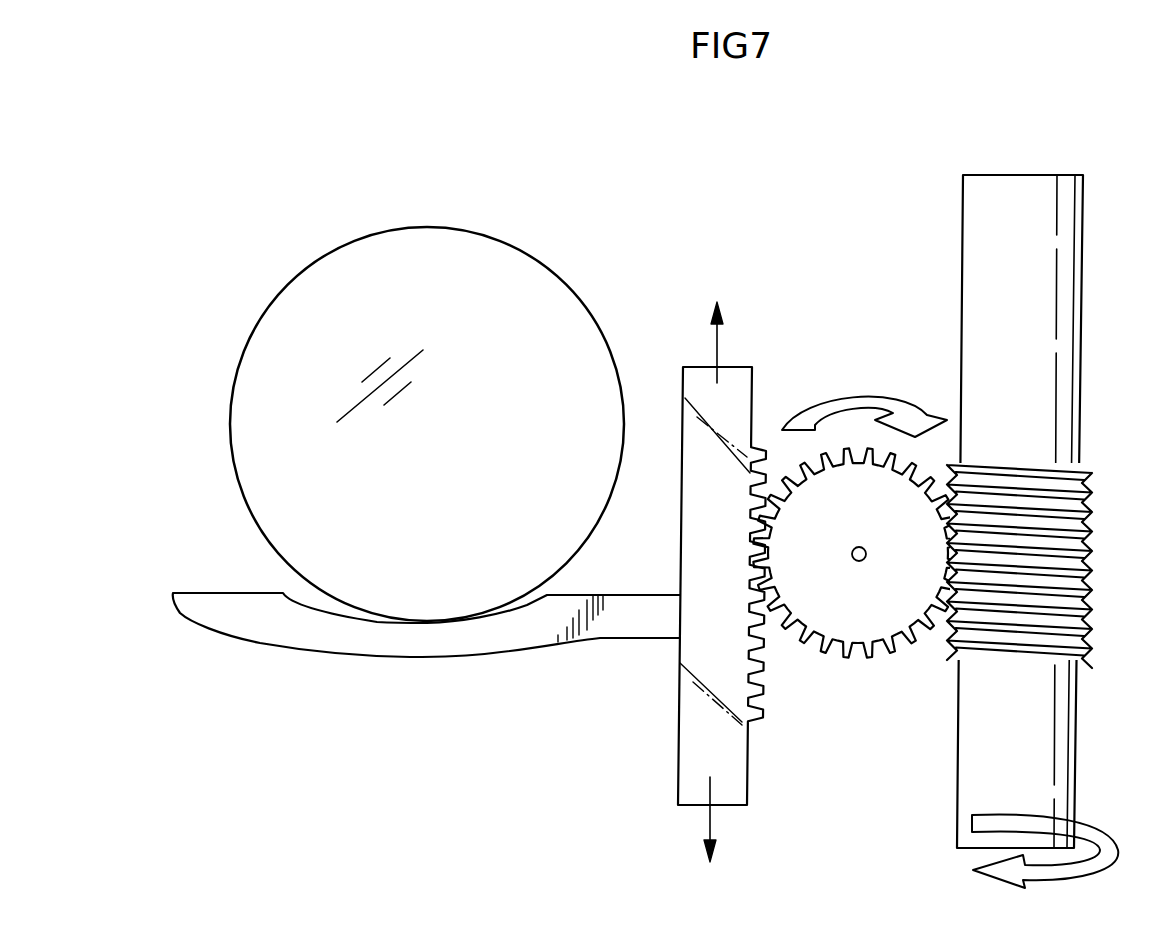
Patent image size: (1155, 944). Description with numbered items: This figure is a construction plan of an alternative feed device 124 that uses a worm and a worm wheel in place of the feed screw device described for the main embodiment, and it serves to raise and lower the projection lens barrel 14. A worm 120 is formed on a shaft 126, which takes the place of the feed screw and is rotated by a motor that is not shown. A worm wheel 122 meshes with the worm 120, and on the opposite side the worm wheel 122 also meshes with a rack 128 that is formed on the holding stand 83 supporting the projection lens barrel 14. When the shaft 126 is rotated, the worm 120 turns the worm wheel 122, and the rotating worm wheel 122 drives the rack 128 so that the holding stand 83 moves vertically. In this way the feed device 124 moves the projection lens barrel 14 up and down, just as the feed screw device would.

The projection lens barrel 14 is at (554, 231).
The holding stand 83 is at (435, 645).
The worm 120 is at (1043, 493).
The worm wheel 122 is at (862, 613).
The feed device 124 is at (862, 283).
The shaft 126 is at (1065, 318).
The rack 128 is at (757, 680).